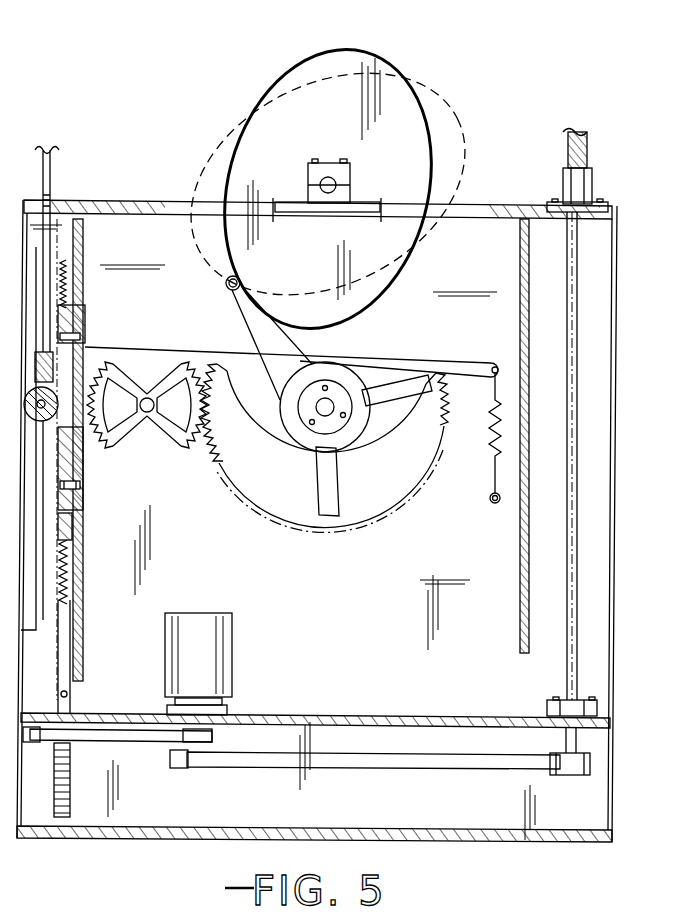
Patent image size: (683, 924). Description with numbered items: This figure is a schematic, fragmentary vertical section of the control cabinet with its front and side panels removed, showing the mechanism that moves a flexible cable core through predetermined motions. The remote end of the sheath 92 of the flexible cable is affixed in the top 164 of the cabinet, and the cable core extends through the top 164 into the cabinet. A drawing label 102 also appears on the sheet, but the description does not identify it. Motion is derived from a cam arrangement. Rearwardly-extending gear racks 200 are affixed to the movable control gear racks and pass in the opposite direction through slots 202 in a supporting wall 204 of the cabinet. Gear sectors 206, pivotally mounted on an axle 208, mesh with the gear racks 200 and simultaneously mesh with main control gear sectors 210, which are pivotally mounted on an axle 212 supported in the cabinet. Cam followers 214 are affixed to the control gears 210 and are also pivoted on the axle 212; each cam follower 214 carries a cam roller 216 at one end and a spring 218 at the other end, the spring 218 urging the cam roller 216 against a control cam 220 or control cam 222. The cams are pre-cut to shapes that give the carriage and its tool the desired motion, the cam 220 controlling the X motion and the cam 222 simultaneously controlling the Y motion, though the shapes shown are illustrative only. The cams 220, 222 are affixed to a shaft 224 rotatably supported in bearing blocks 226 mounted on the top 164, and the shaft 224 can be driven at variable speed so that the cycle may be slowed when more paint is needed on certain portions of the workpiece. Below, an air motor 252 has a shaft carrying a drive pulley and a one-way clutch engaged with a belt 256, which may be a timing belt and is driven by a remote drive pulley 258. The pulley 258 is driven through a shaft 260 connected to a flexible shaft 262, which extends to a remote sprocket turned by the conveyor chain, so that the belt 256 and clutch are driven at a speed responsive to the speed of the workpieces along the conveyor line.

The sheath 92 is at (52, 152).
The gear drive housing 102 is at (130, 192).
The top 164 is at (66, 200).
The rearwardly-extending gear racks 200 is at (85, 458).
The slots 202 is at (84, 530).
The supporting wall 204 is at (72, 620).
The gear sectors 206 is at (200, 456).
The axle 208 is at (146, 396).
The main control gear sectors 210 is at (295, 510).
The axle 212 is at (338, 436).
The cam followers 214 is at (330, 356).
The cam roller 216 is at (222, 290).
The spring 218 is at (492, 440).
The control cam 220 is at (362, 57).
The control cam 222 is at (448, 106).
The shaft 224 is at (328, 177).
The bearing blocks 226 is at (352, 184).
The air motor 252 is at (232, 640).
The belt 256 is at (430, 772).
The remote drive pulley 258 is at (568, 775).
The shaft 260 is at (567, 690).
The flexible shaft 262 is at (568, 160).